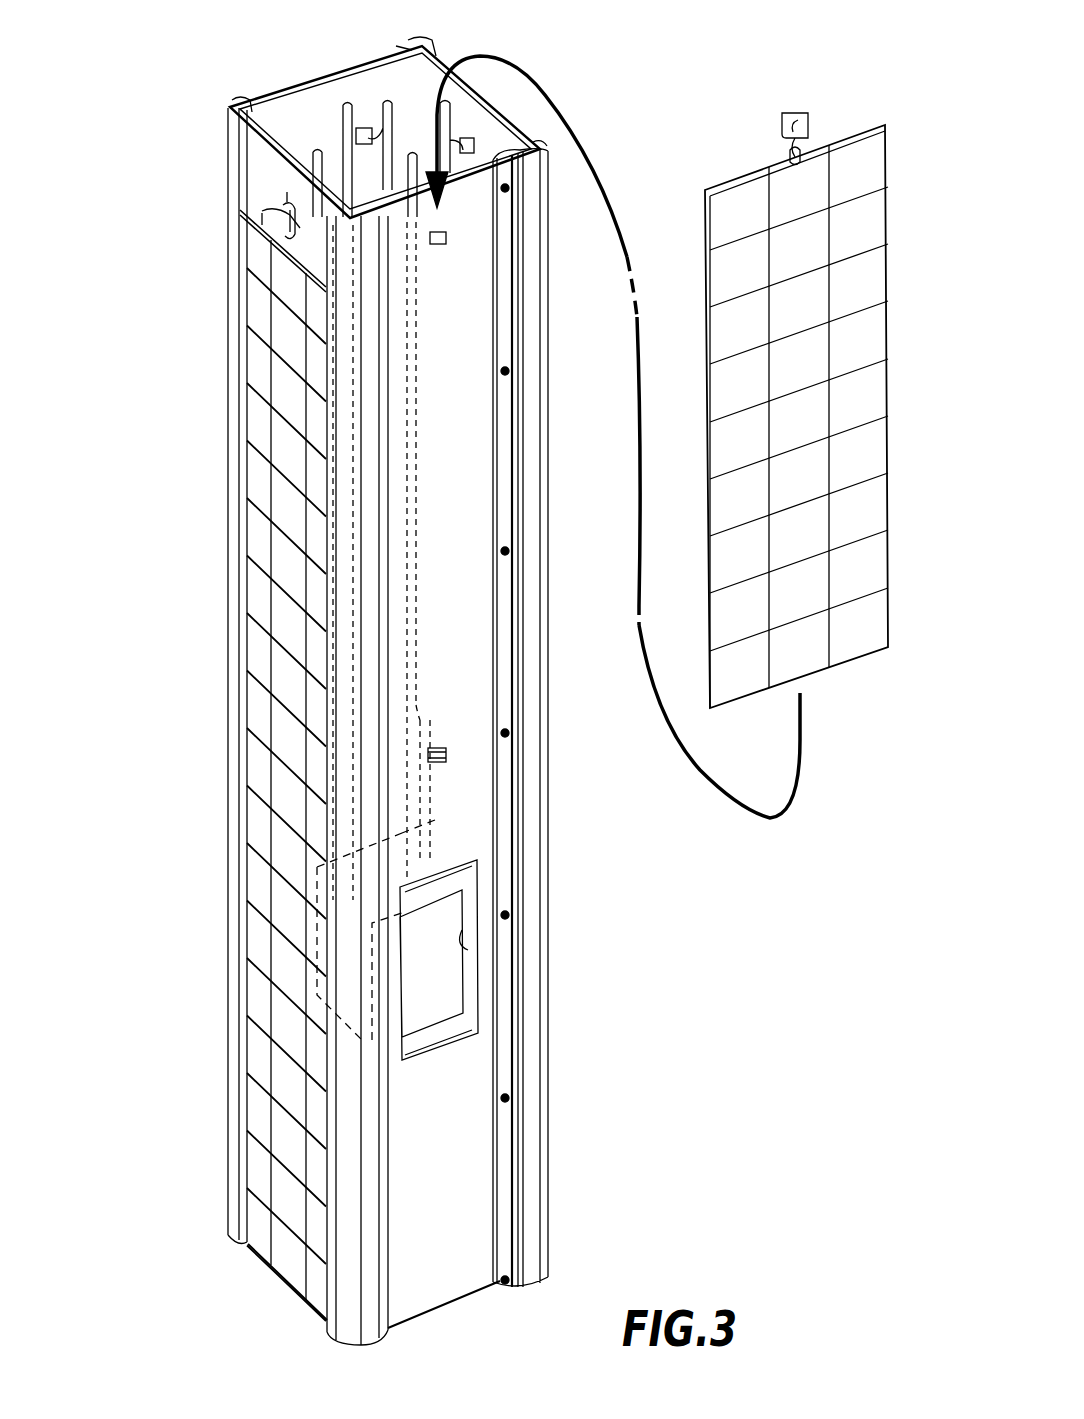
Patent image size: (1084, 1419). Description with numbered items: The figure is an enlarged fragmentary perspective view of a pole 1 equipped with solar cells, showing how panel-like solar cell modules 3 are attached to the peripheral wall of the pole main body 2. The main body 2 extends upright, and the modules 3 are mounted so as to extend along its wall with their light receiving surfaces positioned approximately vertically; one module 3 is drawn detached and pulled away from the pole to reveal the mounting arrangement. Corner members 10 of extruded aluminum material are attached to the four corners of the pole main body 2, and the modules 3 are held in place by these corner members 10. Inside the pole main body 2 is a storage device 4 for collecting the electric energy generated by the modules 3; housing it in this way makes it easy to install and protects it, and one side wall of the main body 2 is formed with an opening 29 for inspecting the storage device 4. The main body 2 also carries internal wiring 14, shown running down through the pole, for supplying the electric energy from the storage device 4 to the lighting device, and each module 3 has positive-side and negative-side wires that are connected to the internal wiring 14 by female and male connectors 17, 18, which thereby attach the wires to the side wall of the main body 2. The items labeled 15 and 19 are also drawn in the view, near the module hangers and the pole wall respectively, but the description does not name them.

The pole 1 is at (612, 97).
The pole main body 2 is at (287, 95).
The solar cell module 3 is at (275, 497).
The storage device 4 is at (438, 973).
The corner member 10 is at (443, 36).
The internal wiring 14 is at (375, 100).
The bracket 15 is at (262, 212).
The female connector 17 is at (356, 128).
The male connector 18 is at (283, 205).
The channel 19 is at (500, 732).
The opening 29 is at (468, 948).